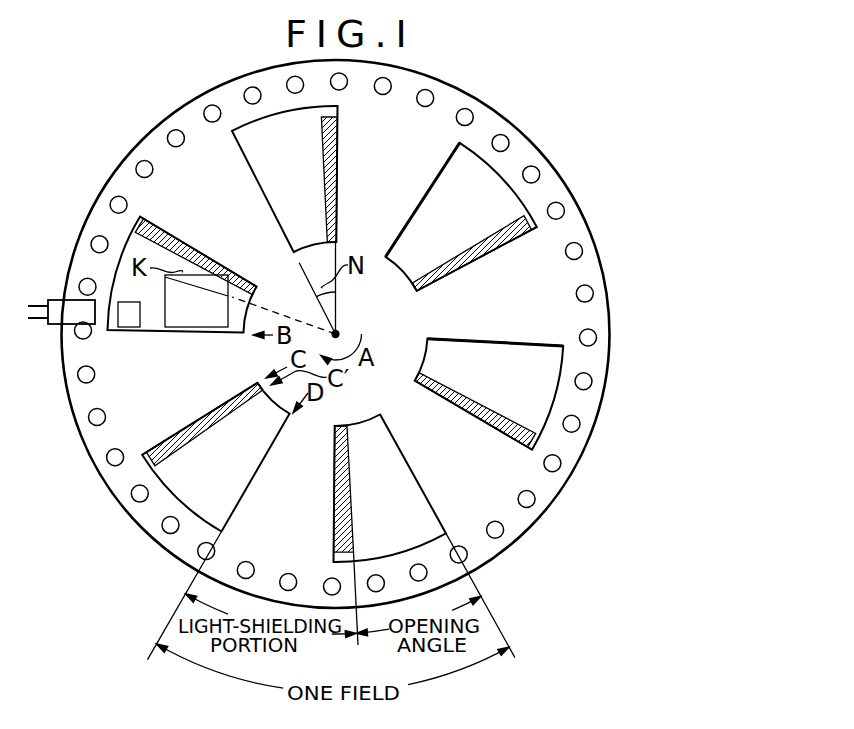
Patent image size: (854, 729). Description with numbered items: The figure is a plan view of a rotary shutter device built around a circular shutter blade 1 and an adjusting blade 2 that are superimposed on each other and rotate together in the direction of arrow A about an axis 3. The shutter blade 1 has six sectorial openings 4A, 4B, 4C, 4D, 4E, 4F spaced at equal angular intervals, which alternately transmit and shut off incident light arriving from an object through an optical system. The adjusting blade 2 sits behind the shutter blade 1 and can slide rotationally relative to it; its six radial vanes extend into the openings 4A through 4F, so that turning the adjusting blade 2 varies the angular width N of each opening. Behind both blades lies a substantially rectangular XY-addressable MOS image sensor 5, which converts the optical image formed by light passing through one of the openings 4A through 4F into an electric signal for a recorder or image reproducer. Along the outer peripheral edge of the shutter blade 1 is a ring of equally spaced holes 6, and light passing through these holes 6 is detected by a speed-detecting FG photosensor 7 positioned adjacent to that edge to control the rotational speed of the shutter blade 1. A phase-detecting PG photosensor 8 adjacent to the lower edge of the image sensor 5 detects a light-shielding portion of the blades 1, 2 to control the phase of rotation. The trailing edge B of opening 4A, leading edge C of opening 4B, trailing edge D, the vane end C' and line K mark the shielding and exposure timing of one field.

The circular shutter blade 1 is at (522, 160).
The adjusting blade 2 is at (490, 420).
The axis 3 is at (337, 332).
The sectorial opening 4A is at (240, 323).
The sectorial opening 4B is at (240, 477).
The sectorial opening 4C is at (424, 515).
The sectorial opening 4D is at (500, 355).
The sectorial opening 4E is at (427, 223).
The sectorial opening 4F is at (277, 187).
The XY-addressable MOS image sensor 5 is at (183, 315).
The holes 6 is at (478, 113).
The speed-detecting photosensor (FG sensor) 7 is at (60, 324).
The phase-detecting photosensor (PG sensor) 8 is at (127, 327).